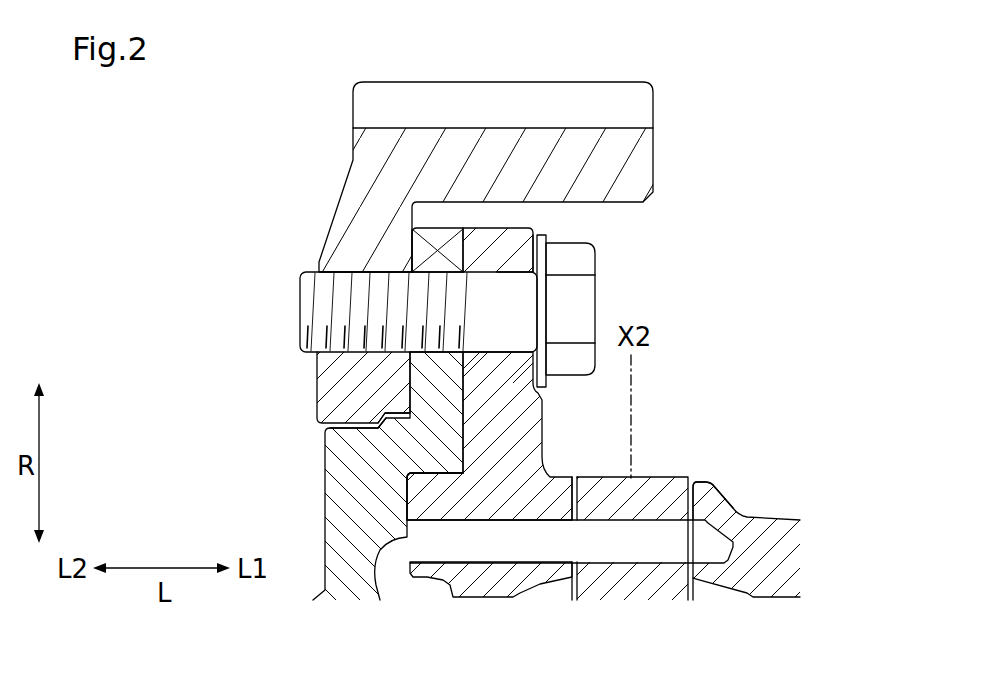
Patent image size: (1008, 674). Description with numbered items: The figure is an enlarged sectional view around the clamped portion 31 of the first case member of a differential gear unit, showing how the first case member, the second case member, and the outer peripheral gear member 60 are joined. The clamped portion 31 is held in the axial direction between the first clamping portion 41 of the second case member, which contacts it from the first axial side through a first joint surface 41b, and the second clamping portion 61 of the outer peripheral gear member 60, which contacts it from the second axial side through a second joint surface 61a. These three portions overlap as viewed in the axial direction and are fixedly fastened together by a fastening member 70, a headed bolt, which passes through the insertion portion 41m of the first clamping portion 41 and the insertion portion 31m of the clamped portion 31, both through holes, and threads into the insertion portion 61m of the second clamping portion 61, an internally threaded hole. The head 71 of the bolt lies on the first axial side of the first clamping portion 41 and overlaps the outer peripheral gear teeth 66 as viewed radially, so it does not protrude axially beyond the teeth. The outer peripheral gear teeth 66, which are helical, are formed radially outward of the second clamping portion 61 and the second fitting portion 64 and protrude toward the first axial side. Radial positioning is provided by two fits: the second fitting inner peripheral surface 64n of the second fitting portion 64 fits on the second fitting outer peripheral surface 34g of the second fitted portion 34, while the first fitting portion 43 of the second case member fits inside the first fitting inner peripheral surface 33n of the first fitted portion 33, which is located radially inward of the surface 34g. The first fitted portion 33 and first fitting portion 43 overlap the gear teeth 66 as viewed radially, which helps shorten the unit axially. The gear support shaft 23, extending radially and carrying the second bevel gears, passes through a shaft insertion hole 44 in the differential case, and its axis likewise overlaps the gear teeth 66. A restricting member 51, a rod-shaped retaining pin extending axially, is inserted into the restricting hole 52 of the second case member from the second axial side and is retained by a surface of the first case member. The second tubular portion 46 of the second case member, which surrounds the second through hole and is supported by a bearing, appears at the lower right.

The outer peripheral gear member 60 is at (446, 154).
The outer peripheral gear teeth 66 is at (583, 93).
The second clamping portion 61 is at (367, 258).
The second joint surface 61a is at (425, 263).
The insertion portion of the second clamping portion 61m is at (360, 273).
The clamped portion 31 is at (440, 237).
The insertion portion of the clamped portion 31m is at (437, 274).
The first clamping portion 41 is at (498, 237).
The first joint surface 41b is at (466, 255).
The insertion portion of the first clamping portion 41m is at (497, 274).
The fastening member 70 is at (310, 321).
The head of the bolt 71 is at (583, 322).
The second fitted portion 34 is at (302, 387).
The second fitting outer peripheral surface 34g is at (385, 418).
The second fitting portion 64 is at (333, 476).
The second fitting inner peripheral surface 64n is at (358, 441).
The first fitting portion 43 is at (442, 470).
The first fitted portion 33 is at (336, 504).
The first fitting inner peripheral surface 33n is at (432, 482).
The restricting hole 52 is at (563, 518).
The gear support shaft 23 is at (642, 492).
The shaft insertion hole 44 is at (673, 490).
The restricting member 51 is at (693, 540).
The second tubular portion 46 is at (775, 553).